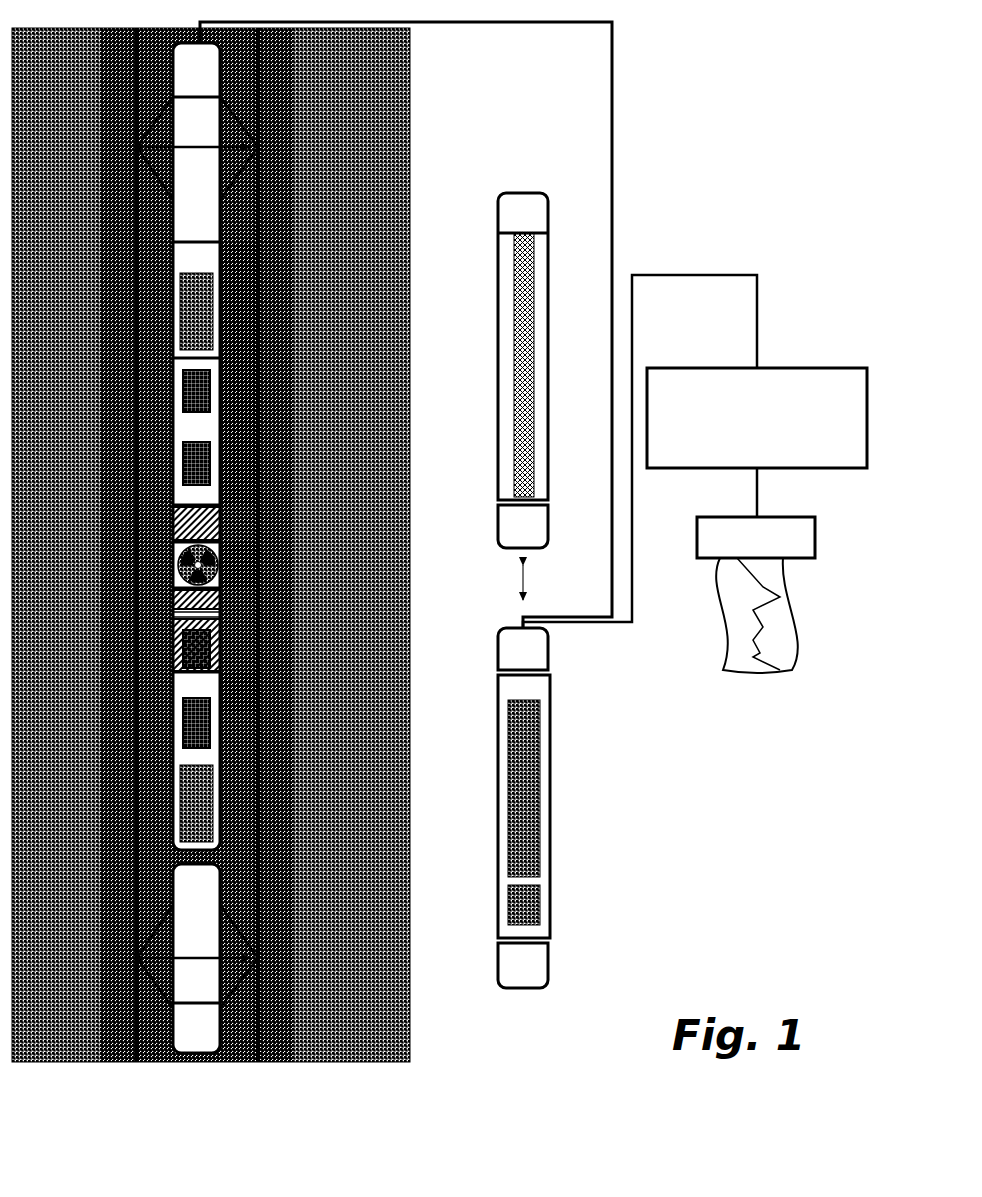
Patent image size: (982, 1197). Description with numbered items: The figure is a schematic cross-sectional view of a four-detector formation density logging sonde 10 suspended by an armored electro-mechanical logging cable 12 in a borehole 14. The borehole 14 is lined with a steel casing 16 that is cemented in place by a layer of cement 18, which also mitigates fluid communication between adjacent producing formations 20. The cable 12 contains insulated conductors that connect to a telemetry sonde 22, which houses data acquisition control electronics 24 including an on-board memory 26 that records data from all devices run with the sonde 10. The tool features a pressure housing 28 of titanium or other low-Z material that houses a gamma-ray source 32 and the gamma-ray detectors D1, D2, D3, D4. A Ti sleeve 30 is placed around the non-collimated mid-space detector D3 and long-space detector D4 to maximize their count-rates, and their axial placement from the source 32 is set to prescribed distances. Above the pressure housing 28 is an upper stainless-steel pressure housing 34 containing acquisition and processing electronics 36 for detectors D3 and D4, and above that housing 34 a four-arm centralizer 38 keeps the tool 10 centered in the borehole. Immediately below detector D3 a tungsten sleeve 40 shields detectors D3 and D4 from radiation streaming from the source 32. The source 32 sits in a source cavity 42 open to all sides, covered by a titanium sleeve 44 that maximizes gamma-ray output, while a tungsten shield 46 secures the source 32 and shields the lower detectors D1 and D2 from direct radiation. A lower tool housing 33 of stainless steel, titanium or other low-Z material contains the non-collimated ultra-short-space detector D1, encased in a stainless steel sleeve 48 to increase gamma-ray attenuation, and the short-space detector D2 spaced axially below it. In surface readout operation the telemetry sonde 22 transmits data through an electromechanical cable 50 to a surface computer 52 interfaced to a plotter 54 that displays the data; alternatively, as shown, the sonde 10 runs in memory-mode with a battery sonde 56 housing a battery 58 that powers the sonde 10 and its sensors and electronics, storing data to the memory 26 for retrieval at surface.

The logging sonde 10 is at (218, 257).
The armored electro-mechanical logging cable 12 is at (498, 26).
The borehole 14 is at (197, 545).
The steel casing 16 is at (263, 942).
The layer of cement 18 is at (272, 907).
The producing formations 20 is at (310, 863).
The telemetry sonde 22 is at (551, 710).
The data acquisition control electronics 24 is at (528, 763).
The on-board memory 26 is at (535, 902).
The pressure housing 28 is at (227, 370).
The Ti sleeve 30 is at (211, 403).
The gamma-ray source 32 is at (215, 570).
The lower tool housing 33 is at (230, 688).
The upper stainless-steel pressure housing 34 is at (225, 312).
The acquisition and processing electronics 36 is at (205, 288).
The centralizer 38 is at (208, 170).
The tungsten sleeve 40 is at (203, 522).
The source cavity 42 is at (228, 547).
The titanium sleeve 44 is at (220, 555).
The tungsten shield 46 is at (205, 600).
The stainless steel sleeve 48 is at (212, 628).
The electromechanical cable 50 is at (758, 323).
The surface computer 52 is at (703, 400).
The plotter 54 is at (733, 550).
The battery sonde 56 is at (537, 380).
The battery 58 is at (552, 347).
The ultra-short-space gamma-ray scintillation detector D1 is at (207, 645).
The short-space detector D2 is at (203, 717).
The mid-space detector D3 is at (198, 462).
The long-space detector D4 is at (198, 393).